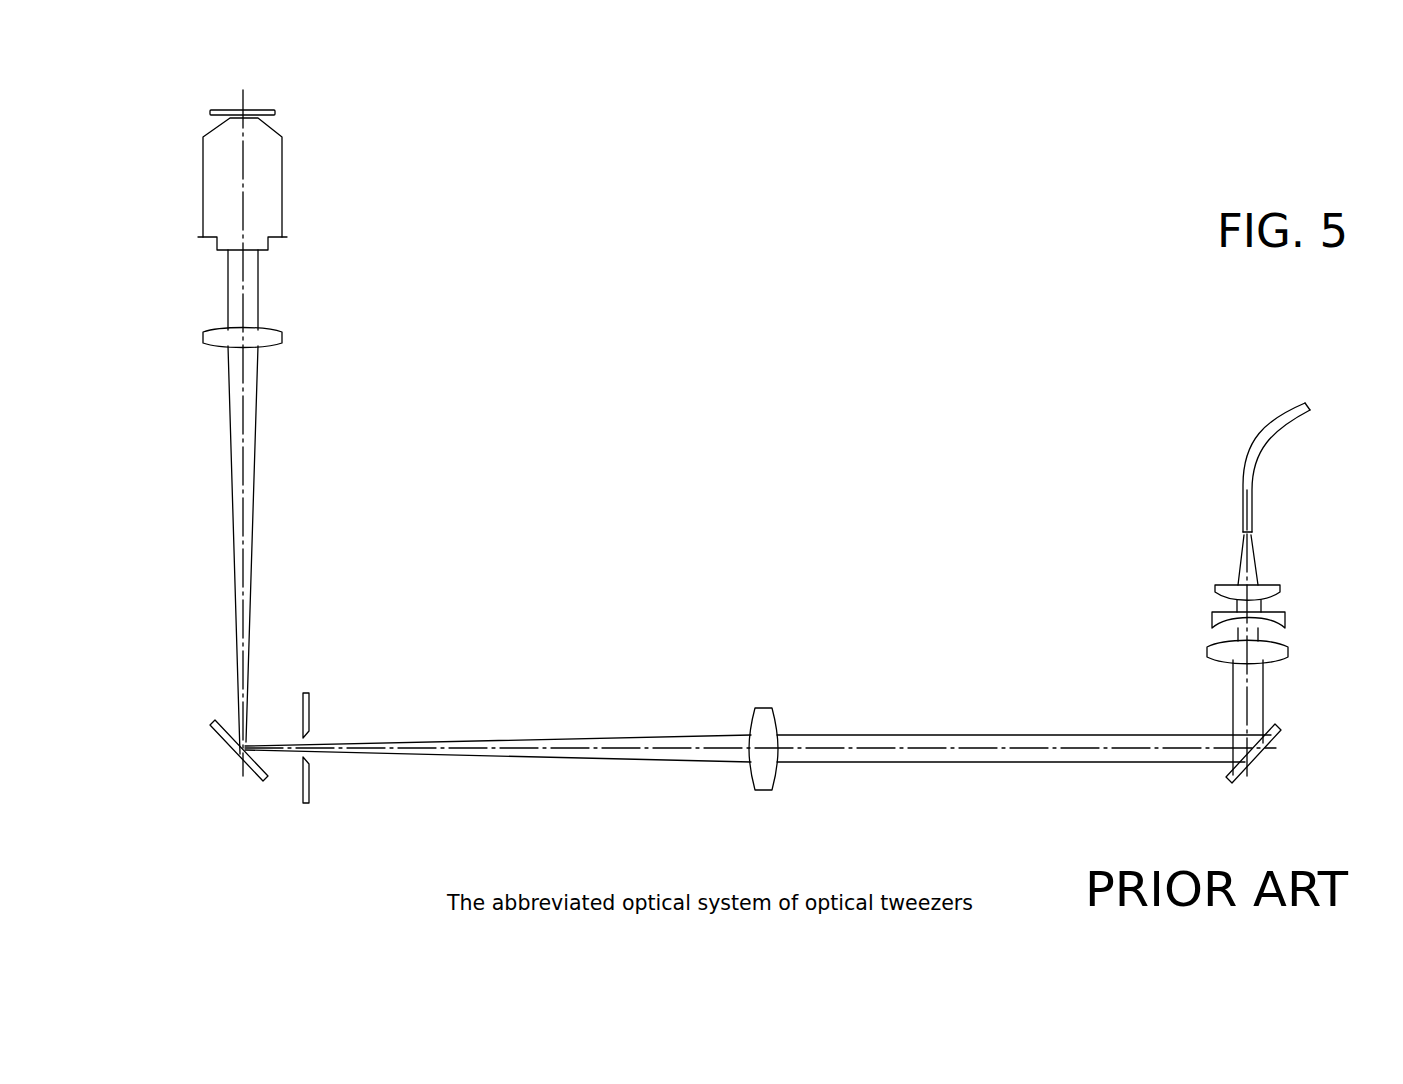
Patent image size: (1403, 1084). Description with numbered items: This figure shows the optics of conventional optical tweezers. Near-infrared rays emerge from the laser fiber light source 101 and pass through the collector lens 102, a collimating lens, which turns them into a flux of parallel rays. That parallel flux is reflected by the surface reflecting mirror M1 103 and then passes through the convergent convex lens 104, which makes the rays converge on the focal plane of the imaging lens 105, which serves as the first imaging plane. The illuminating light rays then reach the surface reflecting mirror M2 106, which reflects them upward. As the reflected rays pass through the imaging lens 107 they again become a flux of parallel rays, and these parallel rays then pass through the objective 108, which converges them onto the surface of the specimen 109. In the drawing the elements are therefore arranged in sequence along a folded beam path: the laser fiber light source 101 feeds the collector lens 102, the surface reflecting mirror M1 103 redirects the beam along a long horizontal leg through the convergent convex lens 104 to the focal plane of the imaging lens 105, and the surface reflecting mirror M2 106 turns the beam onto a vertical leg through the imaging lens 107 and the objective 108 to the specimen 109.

The laser fiber light source 101 is at (1255, 478).
The collector lens 102 is at (1296, 583).
The surface reflecting mirror M1 103 is at (1270, 745).
The convergent convex lens 104 is at (765, 792).
The focal plane of the imaging lens 105 is at (308, 778).
The surface reflecting mirror M2 106 is at (215, 738).
The imaging lens 107 is at (216, 337).
The objective 108 is at (227, 187).
The specimen 109 is at (230, 110).